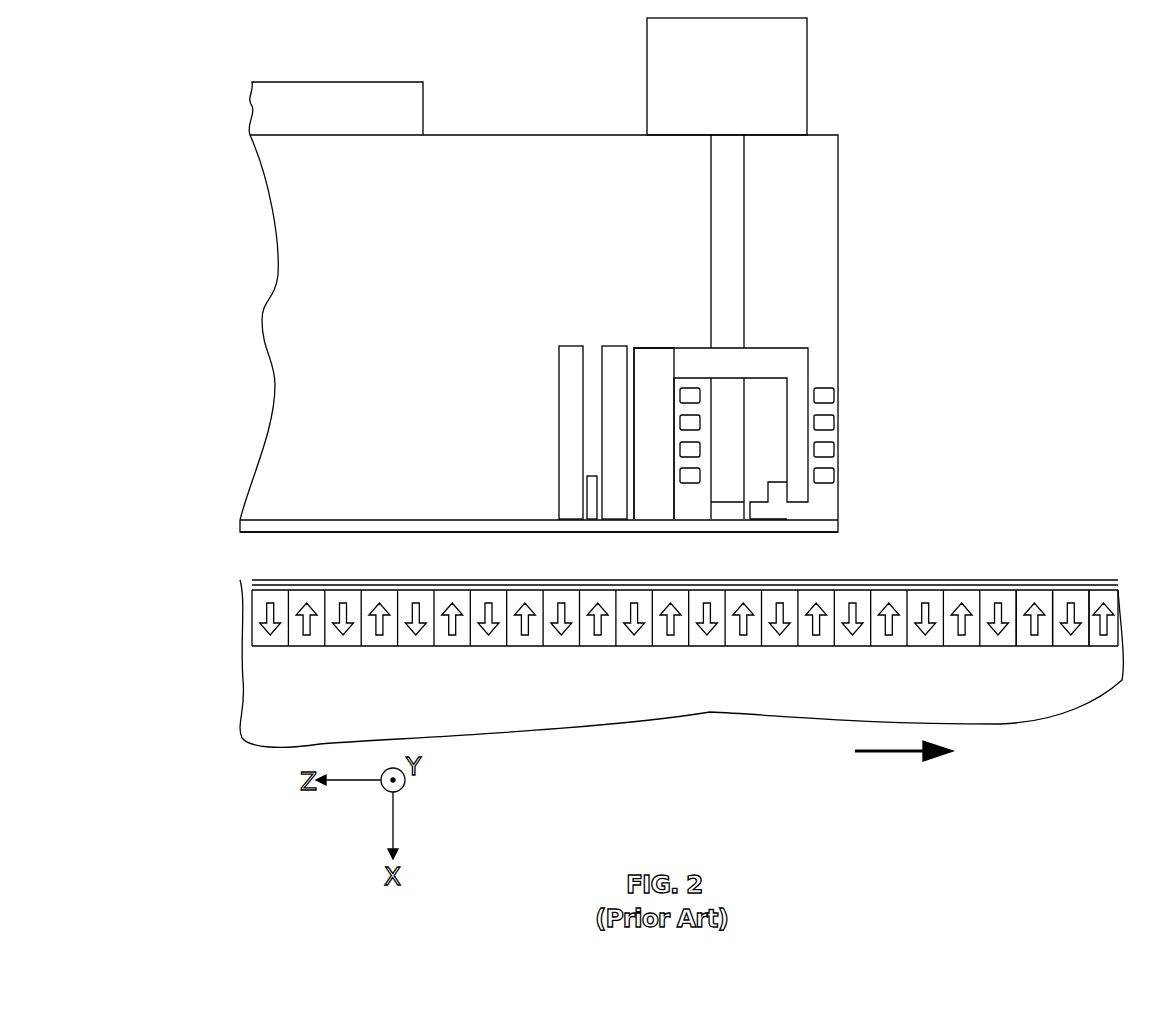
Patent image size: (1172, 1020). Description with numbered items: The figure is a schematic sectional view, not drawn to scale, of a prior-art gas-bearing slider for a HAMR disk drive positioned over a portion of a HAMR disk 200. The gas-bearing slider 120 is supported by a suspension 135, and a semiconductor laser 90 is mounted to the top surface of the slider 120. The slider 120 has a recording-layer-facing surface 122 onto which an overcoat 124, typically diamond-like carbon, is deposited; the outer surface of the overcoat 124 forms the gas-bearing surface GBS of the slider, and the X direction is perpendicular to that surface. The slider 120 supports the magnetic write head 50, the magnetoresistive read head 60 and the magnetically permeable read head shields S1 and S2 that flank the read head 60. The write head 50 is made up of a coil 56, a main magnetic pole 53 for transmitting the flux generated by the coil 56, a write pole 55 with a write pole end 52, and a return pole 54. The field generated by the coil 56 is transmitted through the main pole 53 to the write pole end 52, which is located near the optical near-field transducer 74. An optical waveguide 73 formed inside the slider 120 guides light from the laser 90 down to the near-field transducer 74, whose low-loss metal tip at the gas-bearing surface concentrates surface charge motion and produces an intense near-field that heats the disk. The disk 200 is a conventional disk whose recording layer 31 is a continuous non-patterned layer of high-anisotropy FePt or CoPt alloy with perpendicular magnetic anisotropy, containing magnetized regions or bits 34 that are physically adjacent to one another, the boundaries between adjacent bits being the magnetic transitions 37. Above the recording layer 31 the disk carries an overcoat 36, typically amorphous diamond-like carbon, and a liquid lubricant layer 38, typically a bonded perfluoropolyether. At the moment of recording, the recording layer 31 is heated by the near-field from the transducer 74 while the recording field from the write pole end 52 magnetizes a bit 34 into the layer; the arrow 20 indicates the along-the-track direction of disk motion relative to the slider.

The gas-bearing slider 120 is at (285, 408).
The suspension 135 is at (413, 88).
The semiconductor laser 90 is at (795, 77).
The optical waveguide 73 is at (727, 288).
The magnetic write head 50 is at (648, 278).
The main magnetic pole 53 is at (803, 372).
The return pole 54 is at (654, 358).
The read head shield S1 is at (573, 435).
The read head shield S2 is at (616, 345).
The magnetoresistive read head 60 is at (586, 505).
The coil 56 is at (672, 382).
The optical near-field transducer 74 is at (722, 500).
The write pole end 52 is at (757, 500).
The write pole 55 is at (777, 512).
The recording-layer-facing surface 122 is at (358, 520).
The overcoat 124 is at (395, 530).
The gas-bearing surface GBS is at (819, 531).
The disk 200 is at (998, 712).
The liquid lubricant layer 38 is at (940, 580).
The overcoat 36 is at (1010, 586).
The bits 34 is at (1068, 602).
The recording layer 31 is at (226, 590).
The magnetic transitions 37 is at (1086, 674).
The medium motion direction 20 is at (892, 754).